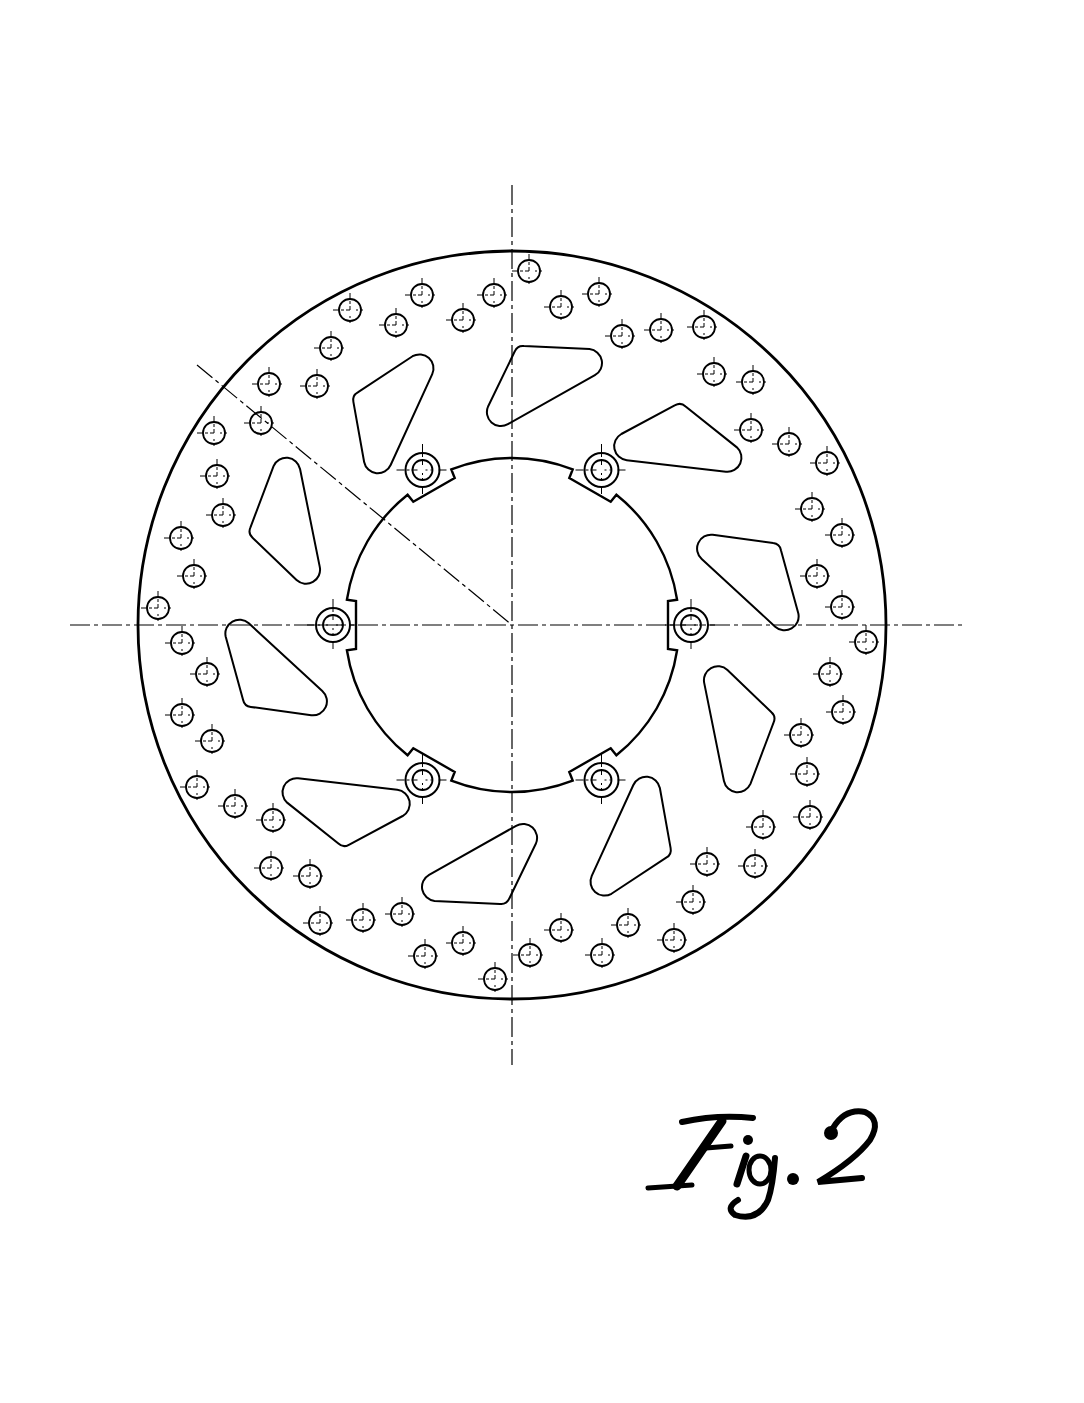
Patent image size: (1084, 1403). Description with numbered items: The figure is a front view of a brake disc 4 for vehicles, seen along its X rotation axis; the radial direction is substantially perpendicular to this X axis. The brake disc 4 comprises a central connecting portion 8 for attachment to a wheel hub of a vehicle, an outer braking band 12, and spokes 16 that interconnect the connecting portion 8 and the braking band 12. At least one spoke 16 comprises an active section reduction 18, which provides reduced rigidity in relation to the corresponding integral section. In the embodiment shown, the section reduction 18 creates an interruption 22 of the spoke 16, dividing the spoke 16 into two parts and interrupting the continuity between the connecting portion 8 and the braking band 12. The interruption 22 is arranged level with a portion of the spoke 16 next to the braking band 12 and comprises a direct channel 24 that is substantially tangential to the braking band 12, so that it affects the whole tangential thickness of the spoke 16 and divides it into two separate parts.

The brake disc 4 is at (277, 166).
The connecting portion 8 is at (481, 450).
The braking band 12 is at (638, 300).
The spoke 16 is at (457, 392).
The section reduction 18 is at (405, 294).
The interruption 22 is at (363, 444).
The direct channel 24 is at (310, 487).
The rotation axis X is at (513, 626).